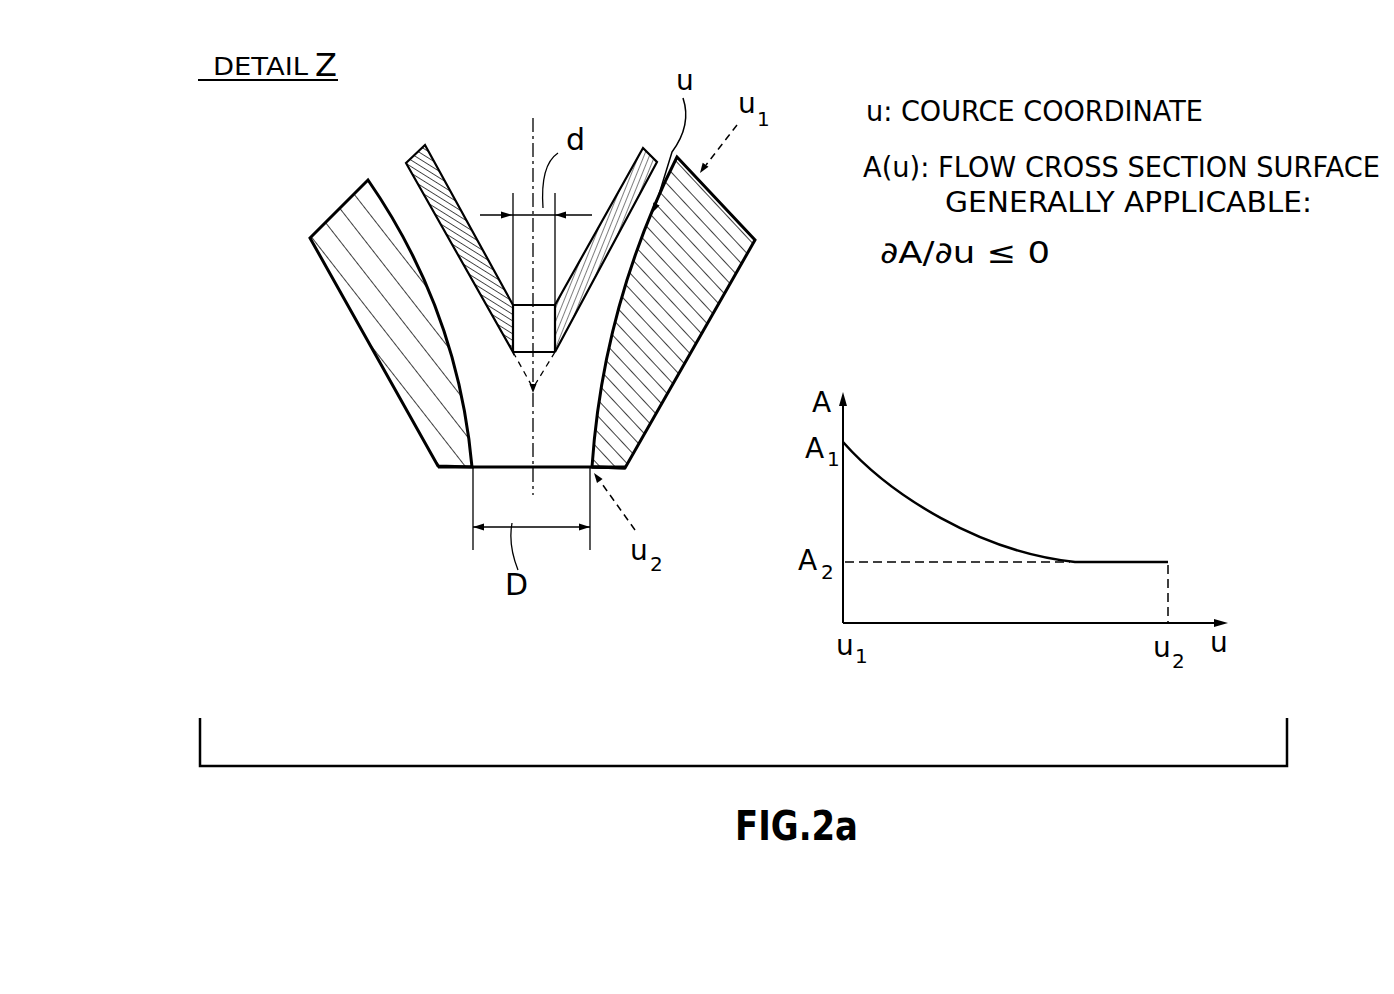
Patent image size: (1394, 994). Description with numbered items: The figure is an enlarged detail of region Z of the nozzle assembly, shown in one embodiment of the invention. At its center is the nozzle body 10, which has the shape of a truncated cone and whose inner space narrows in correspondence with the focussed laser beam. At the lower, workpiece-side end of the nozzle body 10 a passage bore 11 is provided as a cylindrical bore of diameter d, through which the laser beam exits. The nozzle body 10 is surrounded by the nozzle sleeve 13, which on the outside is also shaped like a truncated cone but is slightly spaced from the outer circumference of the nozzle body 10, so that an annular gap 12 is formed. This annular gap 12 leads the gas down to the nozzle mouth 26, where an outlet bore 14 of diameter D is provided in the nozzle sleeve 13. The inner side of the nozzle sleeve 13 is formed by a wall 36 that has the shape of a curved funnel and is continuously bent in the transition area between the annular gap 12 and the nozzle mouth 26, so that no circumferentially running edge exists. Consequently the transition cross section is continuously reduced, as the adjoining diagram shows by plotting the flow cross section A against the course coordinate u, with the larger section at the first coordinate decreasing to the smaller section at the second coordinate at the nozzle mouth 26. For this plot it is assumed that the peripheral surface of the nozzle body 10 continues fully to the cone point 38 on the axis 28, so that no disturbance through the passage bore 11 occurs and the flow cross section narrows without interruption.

The nozzle body 10 is at (642, 150).
The passage bore 11 is at (545, 330).
The annular gap 12 is at (403, 195).
The nozzle sleeve 13 is at (720, 232).
The outlet bore 14 is at (630, 468).
The nozzle mouth 26 is at (497, 417).
The nozzle axis 28 is at (530, 130).
The wall 36 is at (452, 352).
The cone point 38 is at (535, 388).